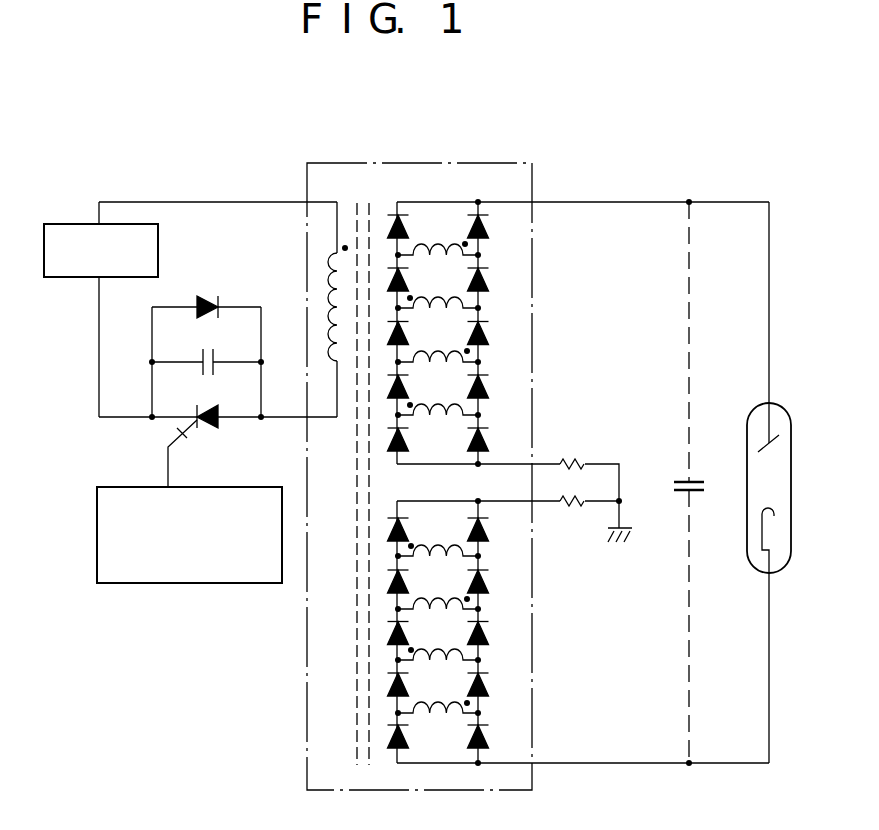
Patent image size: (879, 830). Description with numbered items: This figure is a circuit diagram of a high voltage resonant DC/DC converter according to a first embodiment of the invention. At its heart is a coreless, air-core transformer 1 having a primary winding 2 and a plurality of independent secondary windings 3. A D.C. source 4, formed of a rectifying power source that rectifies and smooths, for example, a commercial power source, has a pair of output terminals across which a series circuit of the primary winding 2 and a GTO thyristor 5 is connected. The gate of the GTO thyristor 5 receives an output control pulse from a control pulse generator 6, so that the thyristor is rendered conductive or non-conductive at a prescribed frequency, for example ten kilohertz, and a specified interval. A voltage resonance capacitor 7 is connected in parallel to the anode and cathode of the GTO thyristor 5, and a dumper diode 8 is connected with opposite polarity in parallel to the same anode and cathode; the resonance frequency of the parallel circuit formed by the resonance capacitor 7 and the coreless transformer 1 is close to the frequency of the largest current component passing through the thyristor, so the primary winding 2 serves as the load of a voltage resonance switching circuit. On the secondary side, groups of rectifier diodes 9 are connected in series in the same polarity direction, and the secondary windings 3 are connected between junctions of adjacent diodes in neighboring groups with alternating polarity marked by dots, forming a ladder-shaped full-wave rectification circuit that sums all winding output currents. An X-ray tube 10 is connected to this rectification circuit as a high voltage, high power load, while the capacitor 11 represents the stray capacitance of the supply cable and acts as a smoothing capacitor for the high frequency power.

The transformer 1 is at (306, 690).
The primary winding 2 is at (333, 278).
The secondary windings 3 is at (435, 245).
The D.C. source 4 is at (110, 277).
The GTO thyristor 5 is at (203, 429).
The control pulse generator 6 is at (216, 583).
The voltage resonance capacitor 7 is at (210, 344).
The dumper diode 8 is at (206, 296).
The rectifier diodes 9 is at (485, 231).
The X-ray tube 10 is at (748, 541).
The capacitor 11 is at (683, 475).